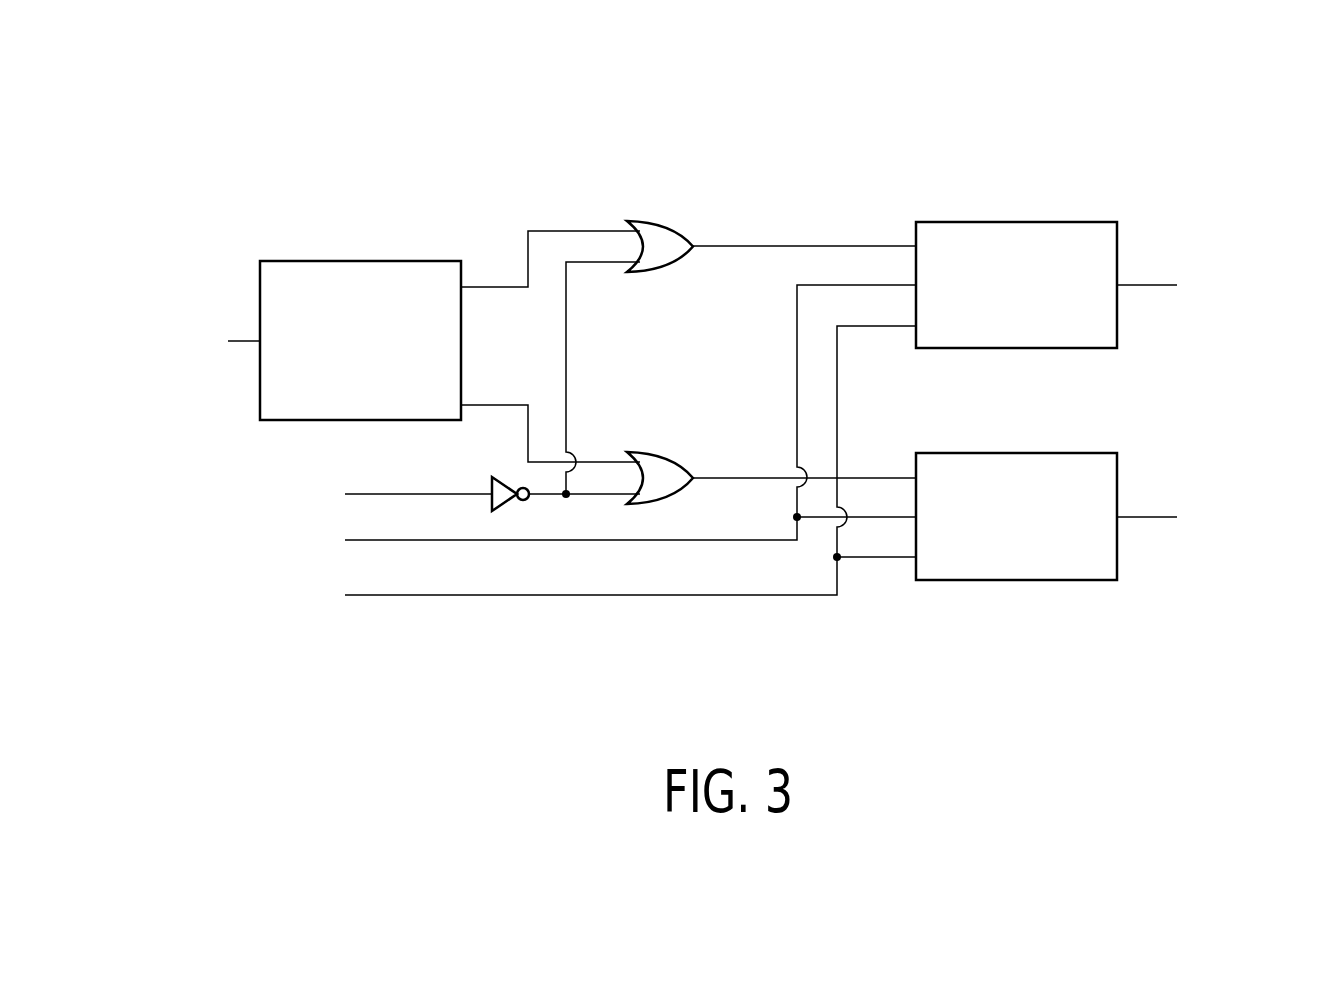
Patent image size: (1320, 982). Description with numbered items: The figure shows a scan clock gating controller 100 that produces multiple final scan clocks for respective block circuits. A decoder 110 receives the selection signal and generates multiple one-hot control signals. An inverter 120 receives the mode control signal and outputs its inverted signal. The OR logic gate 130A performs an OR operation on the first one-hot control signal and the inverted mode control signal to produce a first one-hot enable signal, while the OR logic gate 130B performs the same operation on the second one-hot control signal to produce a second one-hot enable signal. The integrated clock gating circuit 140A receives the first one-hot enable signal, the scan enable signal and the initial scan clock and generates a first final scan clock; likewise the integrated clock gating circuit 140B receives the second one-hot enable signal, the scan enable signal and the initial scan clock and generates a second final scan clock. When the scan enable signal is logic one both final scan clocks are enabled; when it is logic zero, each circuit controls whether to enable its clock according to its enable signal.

The scan clock gating controller 100 is at (228, 120).
The decoder 110 is at (373, 261).
The inverter 120 is at (492, 480).
The OR logic gate 130A is at (705, 203).
The OR logic gate 130B is at (705, 436).
The integrated clock gating circuit 140A is at (1070, 200).
The integrated clock gating circuit 140B is at (1070, 433).